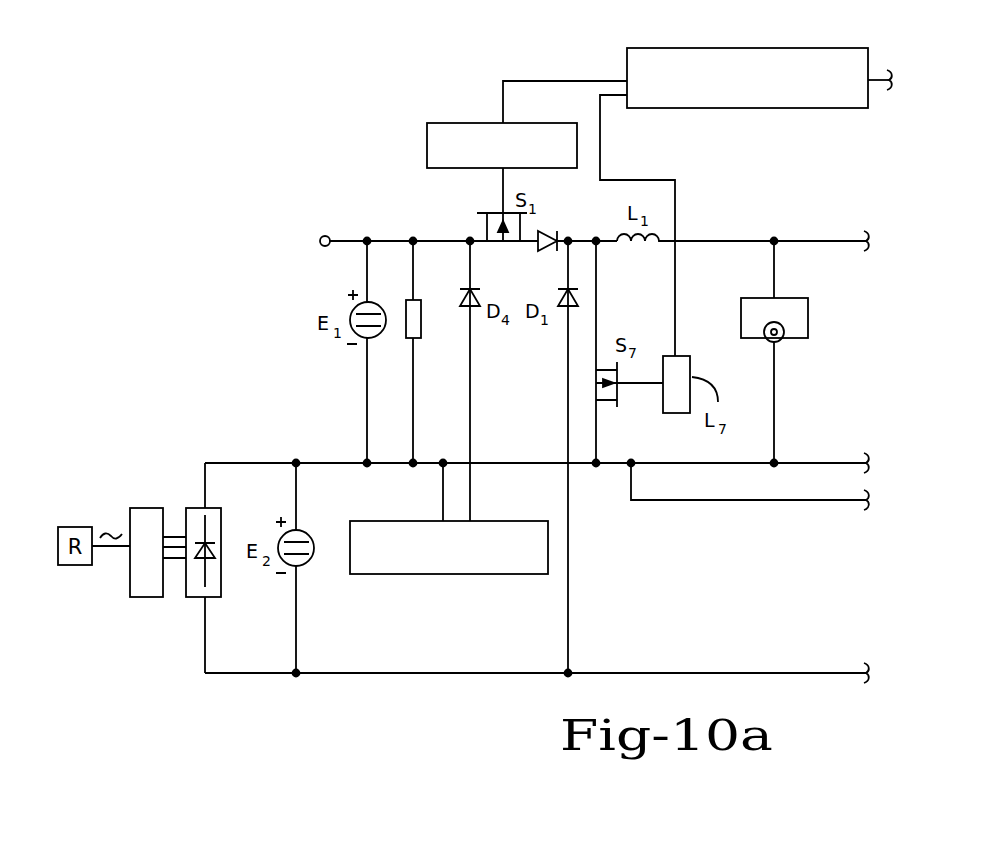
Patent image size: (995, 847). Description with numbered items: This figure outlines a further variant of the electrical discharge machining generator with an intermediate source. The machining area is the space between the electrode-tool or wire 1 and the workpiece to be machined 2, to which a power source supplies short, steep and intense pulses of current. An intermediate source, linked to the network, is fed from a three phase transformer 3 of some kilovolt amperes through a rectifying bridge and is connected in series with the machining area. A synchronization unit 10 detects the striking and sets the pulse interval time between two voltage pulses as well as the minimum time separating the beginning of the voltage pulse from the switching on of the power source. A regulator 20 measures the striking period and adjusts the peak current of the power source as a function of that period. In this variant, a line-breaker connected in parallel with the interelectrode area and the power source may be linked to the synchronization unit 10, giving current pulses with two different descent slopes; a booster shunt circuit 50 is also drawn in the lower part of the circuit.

The electrode-tool or wire 1 is at (778, 338).
The workpiece to be machined 2 is at (808, 310).
The three phase transformer 3 is at (150, 598).
The synchronization unit 10 is at (804, 47).
The regulator 20 is at (460, 122).
The booster shunt circuit 50 is at (437, 574).